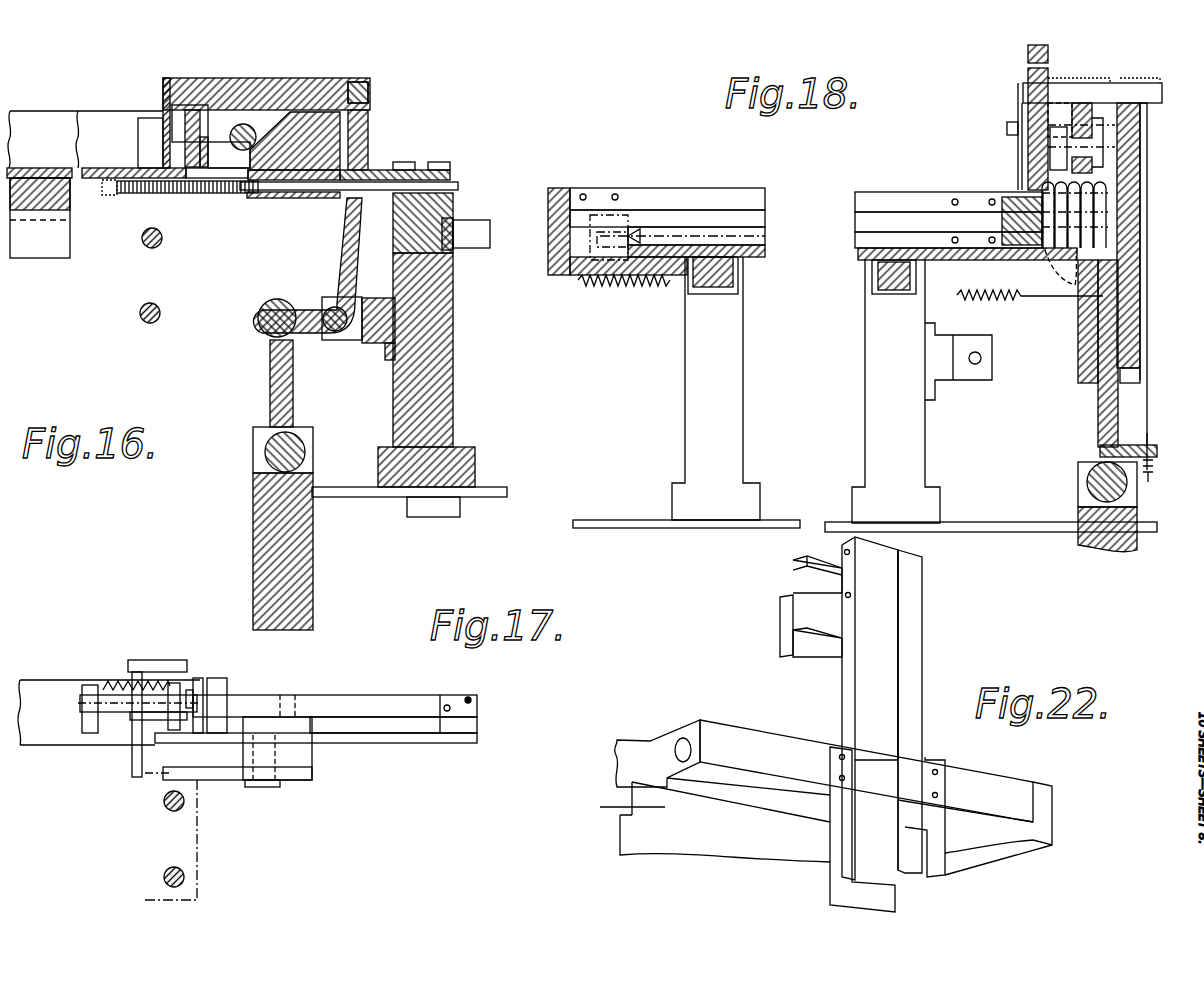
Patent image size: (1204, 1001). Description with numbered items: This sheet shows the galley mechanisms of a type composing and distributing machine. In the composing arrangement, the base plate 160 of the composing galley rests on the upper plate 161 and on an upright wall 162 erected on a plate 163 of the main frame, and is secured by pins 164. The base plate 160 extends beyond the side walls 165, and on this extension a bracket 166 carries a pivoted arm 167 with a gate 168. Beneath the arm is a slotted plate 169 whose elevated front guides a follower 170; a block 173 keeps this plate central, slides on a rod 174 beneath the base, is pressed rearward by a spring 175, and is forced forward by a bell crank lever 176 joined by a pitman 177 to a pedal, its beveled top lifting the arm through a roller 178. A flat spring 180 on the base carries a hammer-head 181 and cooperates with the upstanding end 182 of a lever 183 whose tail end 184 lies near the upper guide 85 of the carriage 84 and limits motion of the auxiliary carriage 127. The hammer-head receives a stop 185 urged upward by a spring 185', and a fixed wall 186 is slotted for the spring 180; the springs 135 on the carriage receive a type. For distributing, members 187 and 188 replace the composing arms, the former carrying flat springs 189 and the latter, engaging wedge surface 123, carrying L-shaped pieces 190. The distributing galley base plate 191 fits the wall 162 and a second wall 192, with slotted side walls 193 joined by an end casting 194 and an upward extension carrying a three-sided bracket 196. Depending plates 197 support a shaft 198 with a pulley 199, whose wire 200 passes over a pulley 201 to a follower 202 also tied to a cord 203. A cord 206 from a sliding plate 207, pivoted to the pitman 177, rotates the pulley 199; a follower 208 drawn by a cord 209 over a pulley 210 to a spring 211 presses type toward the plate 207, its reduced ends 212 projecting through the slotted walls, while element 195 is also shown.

In FIG. 22, the carriage 84 is at (648, 735).
In FIG. 17, the guides 85 is at (185, 802).
In FIG. 22, the wedge surface 123 is at (600, 815).
In FIG. 17, the auxiliary carriage 127 is at (197, 837).
In FIG. 22, the auxiliary carriage 127 is at (733, 730).
In FIG. 17, the springs 135 is at (143, 660).
In FIG. 16, the base plate 160 is at (387, 170).
In FIG. 16, the upper plate 161 is at (52, 220).
In FIG. 16, the upright wall 162 is at (458, 320).
In FIG. 17, the upright wall 162 is at (382, 737).
In FIG. 18, the upright wall 162 is at (868, 340).
In FIG. 16, the plate 163 is at (478, 490).
In FIG. 18, the plate 163 is at (777, 520).
In FIG. 16, the pins 164 is at (478, 248).
In FIG. 16, the side walls 165 is at (87, 123).
In FIG. 17, the side walls 165 is at (33, 687).
In FIG. 16, the bracket 166 is at (367, 137).
In FIG. 16, the arm 167 is at (333, 80).
In FIG. 16, the gate 168 is at (157, 123).
In FIG. 16, the slotted plate 169 is at (180, 160).
In FIG. 16, the follower 170 is at (200, 107).
In FIG. 16, the block 173 is at (368, 118).
In FIG. 16, the rod 174 is at (100, 197).
In FIG. 16, the spring 175 is at (207, 197).
In FIG. 16, the bell crank lever 176 is at (343, 248).
In FIG. 16, the pitman 177 is at (258, 490).
In FIG. 18, the pitman 177 is at (1130, 492).
In FIG. 16, the roller 178 is at (257, 83).
In FIG. 17, the flat spring 180 is at (363, 705).
In FIG. 17, the hammer-head 181 is at (197, 682).
In FIG. 17, the upstanding end 182 is at (300, 700).
In FIG. 17, the lever 183 is at (297, 773).
In FIG. 17, the tail end 184 is at (168, 767).
In FIG. 17, the stop 185 is at (230, 689).
In FIG. 17, the spring 185' is at (133, 656).
In FIG. 17, the fixed wall 186 is at (213, 685).
In FIG. 22, the member 187 is at (865, 720).
In FIG. 22, the member 188 is at (922, 640).
In FIG. 22, the flat springs 189 is at (780, 640).
In FIG. 22, the L-shaped pieces 190 is at (795, 560).
In FIG. 18, the base plate 191 is at (763, 248).
In FIG. 18, the second wall 192 is at (692, 333).
In FIG. 18, the side walls 193 is at (697, 190).
In FIG. 18, the end casting 194 is at (548, 267).
In FIG. 18, the bar 195 is at (733, 217).
In FIG. 18, the three-sided inclosing bracket 196 is at (1023, 110).
In FIG. 18, the depending plates 197 is at (1122, 82).
In FIG. 18, the shaft 198 is at (1023, 88).
In FIG. 18, the pulley 199 is at (1048, 52).
In FIG. 18, the wire 200 is at (1057, 82).
In FIG. 18, the pulley 201 is at (1007, 127).
In FIG. 18, the follower 202 is at (1097, 147).
In FIG. 18, the cord 203 is at (1150, 82).
In FIG. 18, the cord 206 is at (1148, 238).
In FIG. 18, the sliding plate 207 is at (1100, 410).
In FIG. 18, the follower 208 is at (610, 190).
In FIG. 18, the cord 209 is at (663, 230).
In FIG. 18, the pulley 210 is at (1070, 255).
In FIG. 18, the spring 211 is at (617, 287).
In FIG. 18, the reduced ends 212 is at (543, 215).